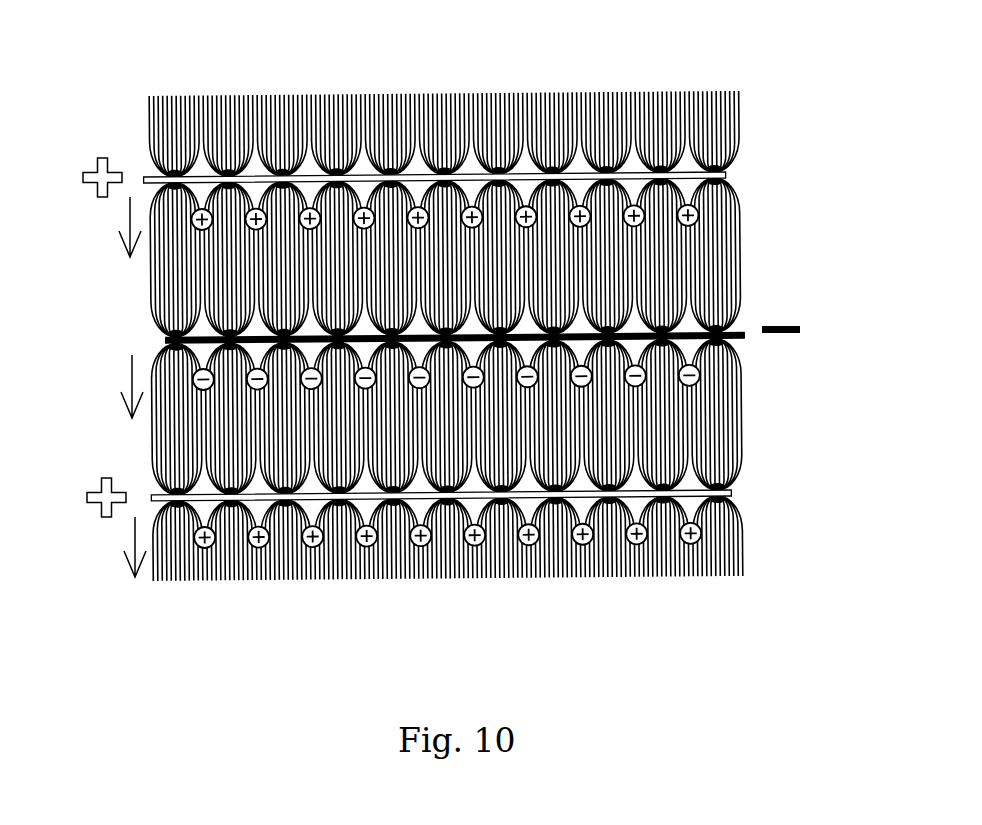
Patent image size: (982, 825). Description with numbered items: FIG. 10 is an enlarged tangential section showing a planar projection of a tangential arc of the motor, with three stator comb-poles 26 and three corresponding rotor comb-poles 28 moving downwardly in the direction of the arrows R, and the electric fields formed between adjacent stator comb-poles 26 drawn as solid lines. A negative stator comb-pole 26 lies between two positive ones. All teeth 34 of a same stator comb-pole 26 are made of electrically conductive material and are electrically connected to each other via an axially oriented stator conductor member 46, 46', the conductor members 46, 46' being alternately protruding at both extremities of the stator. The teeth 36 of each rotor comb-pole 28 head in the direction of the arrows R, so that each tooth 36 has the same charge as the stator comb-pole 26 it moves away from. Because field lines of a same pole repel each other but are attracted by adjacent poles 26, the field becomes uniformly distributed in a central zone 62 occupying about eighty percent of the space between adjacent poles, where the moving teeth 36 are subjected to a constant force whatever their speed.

The stator comb-pole 26 is at (200, 180).
The rotor comb-pole 28 is at (200, 383).
The teeth 34 is at (338, 175).
The teeth 36 is at (417, 540).
The stator conductor member 46 is at (515, 333).
The stator conductor member 46' is at (489, 332).
The central zone 62 is at (533, 125).